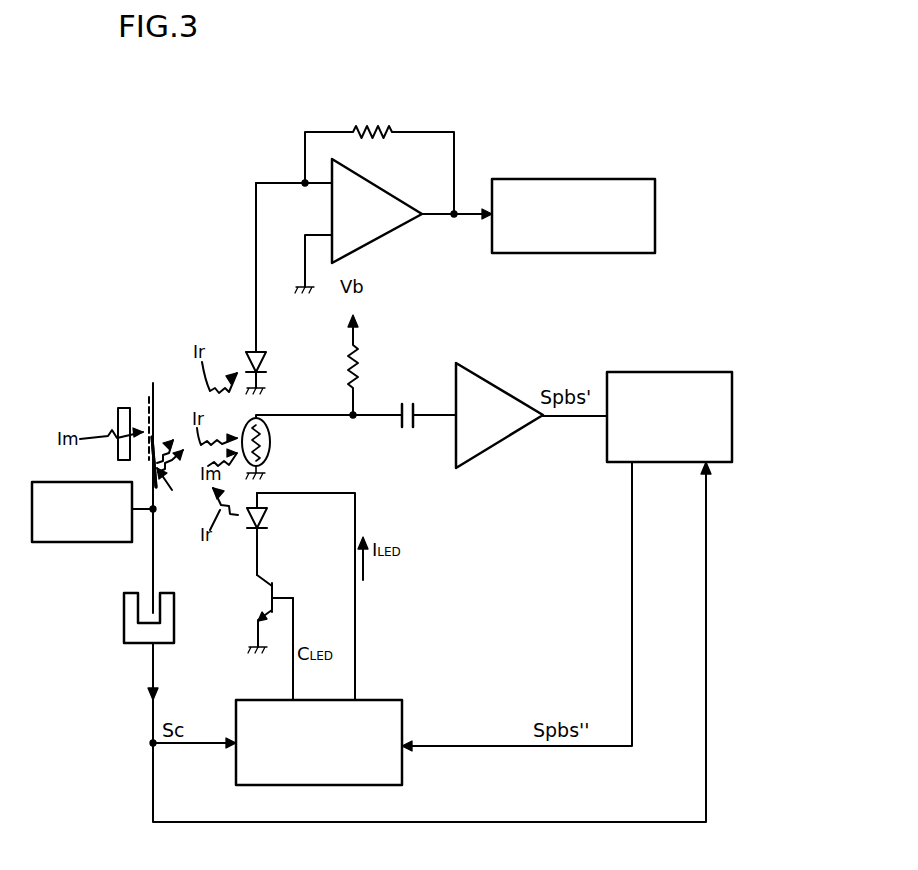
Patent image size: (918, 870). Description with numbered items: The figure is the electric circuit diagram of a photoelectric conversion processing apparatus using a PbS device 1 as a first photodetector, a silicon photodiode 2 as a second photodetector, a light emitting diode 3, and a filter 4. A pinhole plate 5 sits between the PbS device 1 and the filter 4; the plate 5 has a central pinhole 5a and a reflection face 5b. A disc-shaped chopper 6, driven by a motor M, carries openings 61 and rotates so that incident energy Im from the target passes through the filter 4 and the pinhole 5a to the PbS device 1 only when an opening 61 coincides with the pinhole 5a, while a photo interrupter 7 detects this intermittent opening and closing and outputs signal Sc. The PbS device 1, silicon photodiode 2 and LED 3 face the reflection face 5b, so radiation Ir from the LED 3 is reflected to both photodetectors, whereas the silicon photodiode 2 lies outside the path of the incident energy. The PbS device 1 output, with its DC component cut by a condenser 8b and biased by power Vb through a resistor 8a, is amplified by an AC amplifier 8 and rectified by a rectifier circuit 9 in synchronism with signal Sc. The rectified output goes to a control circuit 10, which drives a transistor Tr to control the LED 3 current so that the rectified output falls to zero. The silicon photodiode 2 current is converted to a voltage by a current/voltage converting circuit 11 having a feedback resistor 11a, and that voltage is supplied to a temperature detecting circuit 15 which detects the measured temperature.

The PbS device 1 is at (271, 447).
The silicon photodiode 2 is at (259, 351).
The light emitting diode 3 is at (263, 513).
The filter 4 is at (122, 408).
The pinhole plate 5 is at (156, 388).
The pinhole 5a is at (154, 436).
The reflection face 5b is at (156, 486).
The chopper 6 is at (156, 553).
The openings 61 is at (149, 408).
The photo interrupter 7 is at (170, 605).
The AC amplifier 8 is at (490, 382).
The resistor 8a is at (357, 366).
The condenser 8b is at (399, 419).
The rectifier circuit 9 is at (648, 372).
The control circuit 10 is at (403, 720).
The current/voltage converting circuit 11 is at (378, 238).
The feedback resistor 11a is at (368, 131).
The temperature detecting circuit 15 is at (578, 179).
The motor M is at (86, 543).
The transistor Tr is at (263, 580).